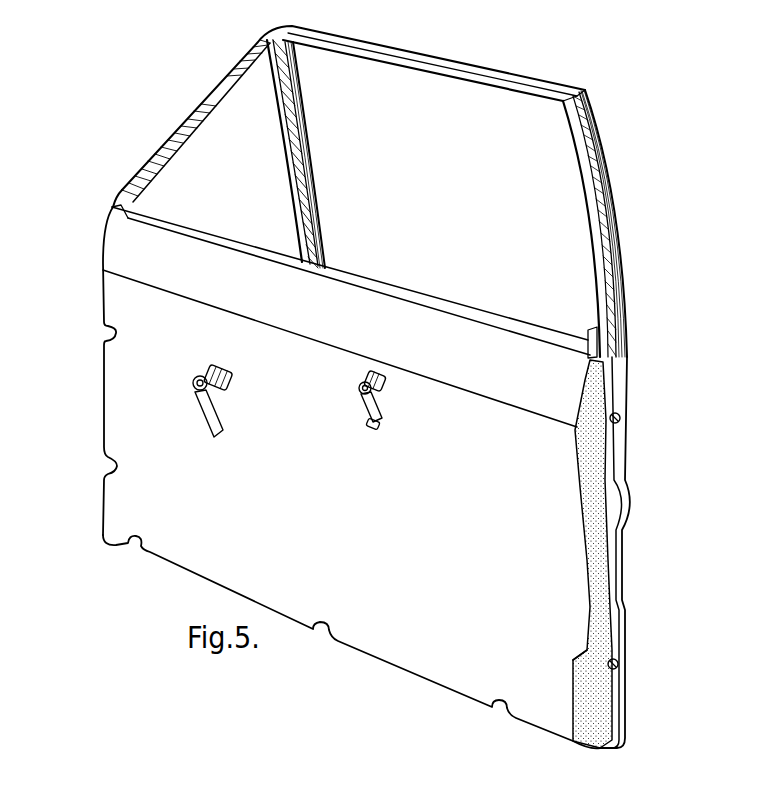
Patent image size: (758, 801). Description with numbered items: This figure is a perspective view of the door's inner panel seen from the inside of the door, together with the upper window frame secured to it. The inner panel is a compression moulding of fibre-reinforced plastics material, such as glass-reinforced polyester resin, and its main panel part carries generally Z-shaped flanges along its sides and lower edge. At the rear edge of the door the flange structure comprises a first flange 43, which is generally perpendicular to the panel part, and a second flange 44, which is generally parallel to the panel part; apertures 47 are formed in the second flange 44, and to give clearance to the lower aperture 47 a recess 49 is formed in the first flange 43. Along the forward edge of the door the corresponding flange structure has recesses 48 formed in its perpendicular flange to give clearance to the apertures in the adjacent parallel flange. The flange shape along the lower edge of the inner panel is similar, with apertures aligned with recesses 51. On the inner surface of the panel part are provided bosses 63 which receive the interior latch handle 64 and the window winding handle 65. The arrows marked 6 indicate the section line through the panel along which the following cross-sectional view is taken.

The section line of FIG. 6 is at (78, 402).
The first flange 43 is at (600, 713).
The second flange 44 is at (622, 690).
The apertures 47 is at (622, 420).
The recesses 48 is at (110, 330).
The recess 49 is at (575, 673).
The recesses 51 is at (142, 546).
The bosses 63 is at (230, 372).
The interior latch handle 64 is at (218, 428).
The window winding handle 65 is at (375, 430).